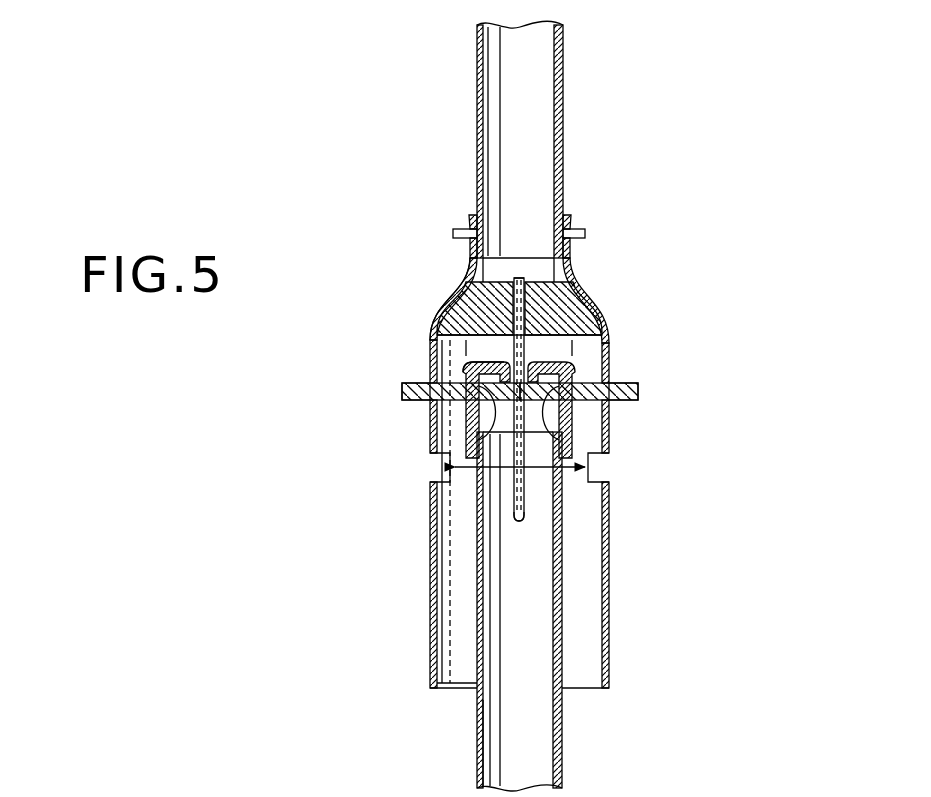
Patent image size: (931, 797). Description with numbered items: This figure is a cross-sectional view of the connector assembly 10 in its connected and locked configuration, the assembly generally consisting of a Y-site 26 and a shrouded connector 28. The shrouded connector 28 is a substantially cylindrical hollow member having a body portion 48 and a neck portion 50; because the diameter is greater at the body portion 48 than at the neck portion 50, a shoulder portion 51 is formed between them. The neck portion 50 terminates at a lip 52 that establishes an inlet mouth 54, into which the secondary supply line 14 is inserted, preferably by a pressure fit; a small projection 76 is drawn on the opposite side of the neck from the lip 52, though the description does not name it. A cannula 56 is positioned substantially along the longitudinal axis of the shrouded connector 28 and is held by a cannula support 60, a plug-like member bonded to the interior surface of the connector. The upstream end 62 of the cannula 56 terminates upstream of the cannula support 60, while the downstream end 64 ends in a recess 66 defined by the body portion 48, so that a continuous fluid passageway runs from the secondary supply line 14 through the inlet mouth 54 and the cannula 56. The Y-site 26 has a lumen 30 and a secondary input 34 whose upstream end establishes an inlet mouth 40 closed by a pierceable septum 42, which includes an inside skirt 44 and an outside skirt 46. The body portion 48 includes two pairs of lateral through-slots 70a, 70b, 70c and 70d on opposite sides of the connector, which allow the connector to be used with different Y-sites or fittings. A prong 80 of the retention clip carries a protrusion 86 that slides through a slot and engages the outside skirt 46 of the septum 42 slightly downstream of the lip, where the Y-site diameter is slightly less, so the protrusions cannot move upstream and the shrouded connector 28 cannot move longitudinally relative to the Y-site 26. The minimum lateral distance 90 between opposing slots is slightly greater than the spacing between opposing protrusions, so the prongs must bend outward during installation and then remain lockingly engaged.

The connector assembly 10 is at (305, 103).
The secondary supply line 14 is at (477, 58).
The inlet mouth 54 is at (517, 122).
The left retaining nub 76 is at (453, 232).
The lip 52 is at (572, 215).
The neck portion 50 is at (470, 262).
The shoulder portion 51 is at (597, 305).
The inlet mouth 40 is at (465, 300).
The pierceable septum 42 is at (482, 357).
The cannula support 60 is at (612, 340).
The upstream end 62 is at (528, 279).
The cannula 56 is at (530, 352).
The downstream end 64 is at (521, 522).
The lateral slot 70a is at (432, 384).
The lateral slot 70b is at (640, 388).
The lateral slot 70c is at (442, 458).
The lateral slot 70d is at (590, 468).
The prong 80 is at (404, 391).
The protrusion 86 is at (615, 398).
The inside skirt 44 is at (470, 413).
The outside skirt 46 is at (577, 428).
The distance 90 is at (505, 470).
The recess 66 is at (462, 673).
The shrouded connector 28 is at (612, 678).
The body portion 48 is at (612, 625).
The Y-site 26 is at (477, 743).
The secondary input 34 is at (515, 585).
The lumen 30 is at (527, 718).